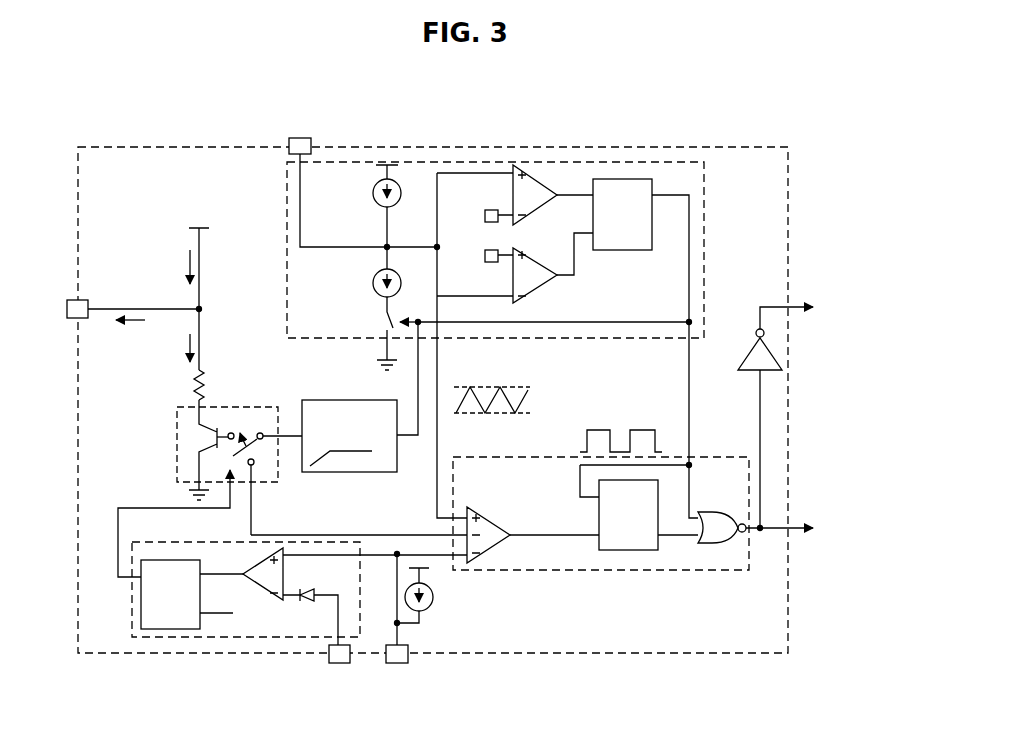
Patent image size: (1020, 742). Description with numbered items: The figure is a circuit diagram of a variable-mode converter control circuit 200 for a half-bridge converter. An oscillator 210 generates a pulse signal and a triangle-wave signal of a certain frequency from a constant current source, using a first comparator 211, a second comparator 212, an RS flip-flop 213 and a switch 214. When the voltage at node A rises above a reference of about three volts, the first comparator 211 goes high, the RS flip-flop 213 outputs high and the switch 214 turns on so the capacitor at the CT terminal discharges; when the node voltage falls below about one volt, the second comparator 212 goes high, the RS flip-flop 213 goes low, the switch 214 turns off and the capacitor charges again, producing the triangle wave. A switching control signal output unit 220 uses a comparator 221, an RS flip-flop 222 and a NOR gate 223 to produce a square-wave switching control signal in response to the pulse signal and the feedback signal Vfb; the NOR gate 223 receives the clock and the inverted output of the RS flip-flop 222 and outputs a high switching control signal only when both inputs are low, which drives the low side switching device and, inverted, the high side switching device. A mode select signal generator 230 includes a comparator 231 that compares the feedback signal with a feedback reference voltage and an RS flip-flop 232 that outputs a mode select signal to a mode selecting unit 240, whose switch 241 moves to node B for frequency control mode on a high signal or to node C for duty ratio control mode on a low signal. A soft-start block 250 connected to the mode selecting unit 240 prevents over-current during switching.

The variable-mode converter control circuit 200 is at (697, 147).
The oscillator 210 is at (483, 162).
The first comparator 211 is at (540, 212).
The second comparator 212 is at (550, 292).
The RS flip-flop 213 is at (652, 222).
The switch 214 is at (388, 322).
The switching control signal output unit 220 is at (749, 468).
The comparator 221 is at (494, 548).
The RS flip-flop 222 is at (628, 550).
The NOR gate 223 is at (706, 543).
The mode select signal generator 230 is at (272, 637).
The comparator 231 is at (242, 582).
The RS flip-flop 232 is at (150, 629).
The mode selecting unit 240 is at (177, 447).
The switch 241 is at (250, 407).
The soft-start block 250 is at (350, 472).